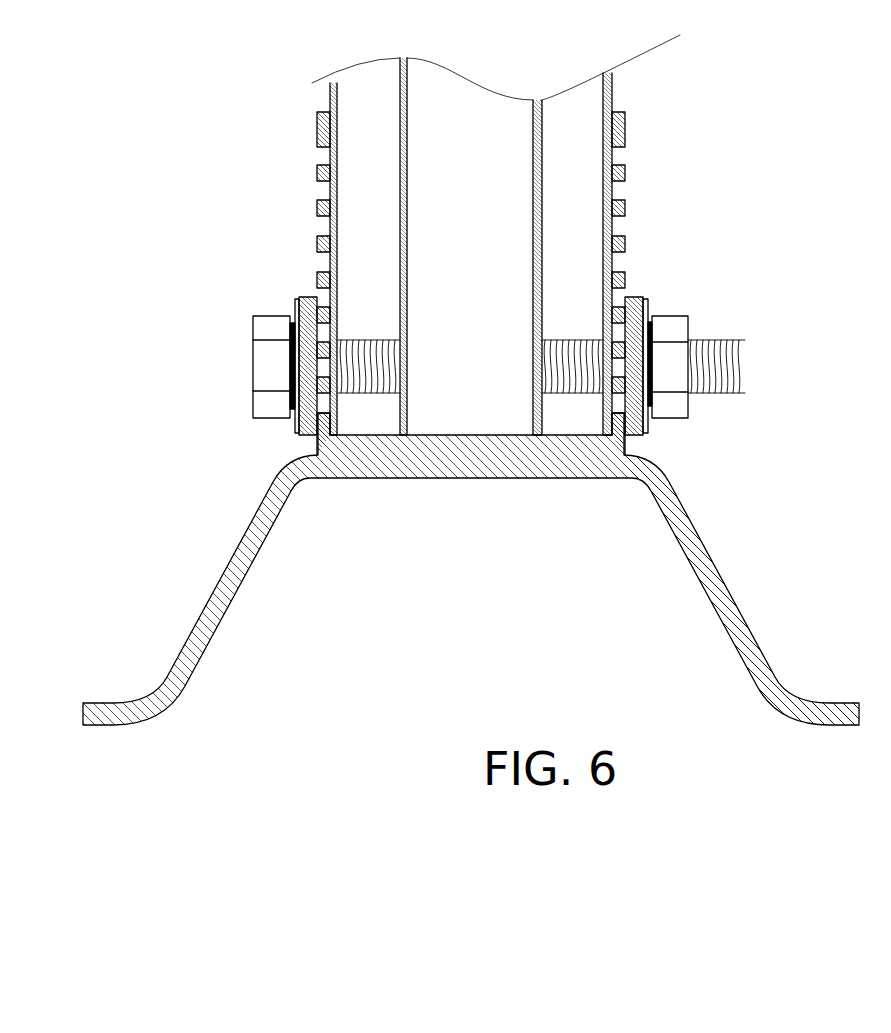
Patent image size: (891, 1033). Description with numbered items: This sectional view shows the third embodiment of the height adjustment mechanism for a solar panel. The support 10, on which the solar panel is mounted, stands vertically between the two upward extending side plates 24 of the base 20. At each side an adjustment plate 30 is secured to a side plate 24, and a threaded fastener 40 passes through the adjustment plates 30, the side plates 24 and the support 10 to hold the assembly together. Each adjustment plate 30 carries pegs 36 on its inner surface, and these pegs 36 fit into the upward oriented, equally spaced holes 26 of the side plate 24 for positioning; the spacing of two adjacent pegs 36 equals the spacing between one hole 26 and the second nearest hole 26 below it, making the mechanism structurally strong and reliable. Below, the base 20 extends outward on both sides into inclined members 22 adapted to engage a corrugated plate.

The support 10 is at (683, 73).
The base 20 is at (502, 518).
The inclined member 22 is at (748, 612).
The side plate 24 is at (315, 112).
The hole 26 is at (622, 193).
The adjustment plate 30 is at (637, 295).
The peg 36 is at (620, 328).
The threaded fastener 40 is at (262, 367).